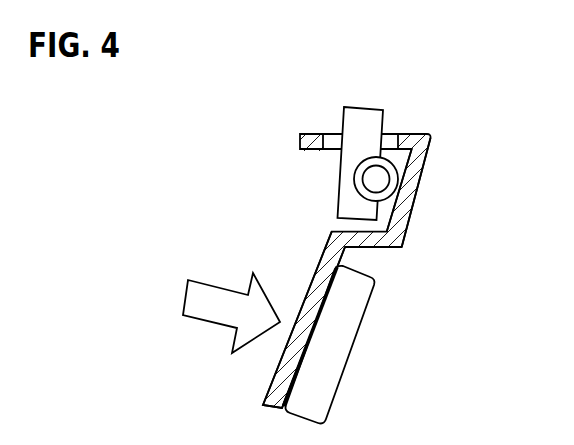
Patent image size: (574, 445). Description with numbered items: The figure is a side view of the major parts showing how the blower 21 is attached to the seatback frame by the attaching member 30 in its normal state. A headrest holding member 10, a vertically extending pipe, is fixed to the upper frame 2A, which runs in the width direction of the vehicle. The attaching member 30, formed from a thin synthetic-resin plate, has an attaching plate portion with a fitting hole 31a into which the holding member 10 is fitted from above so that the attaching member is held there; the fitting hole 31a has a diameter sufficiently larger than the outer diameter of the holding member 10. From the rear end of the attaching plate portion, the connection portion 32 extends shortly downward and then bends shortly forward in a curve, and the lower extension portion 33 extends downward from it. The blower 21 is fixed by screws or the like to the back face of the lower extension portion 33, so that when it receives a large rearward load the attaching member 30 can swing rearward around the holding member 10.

The headrest holding member 10 is at (362, 117).
The upper frame 2A is at (398, 176).
The blower 21 is at (342, 342).
The attaching member 30 is at (408, 138).
The fitting hole 31a is at (331, 140).
The connection portion 32 is at (407, 202).
The lower extension portion 33 is at (277, 375).